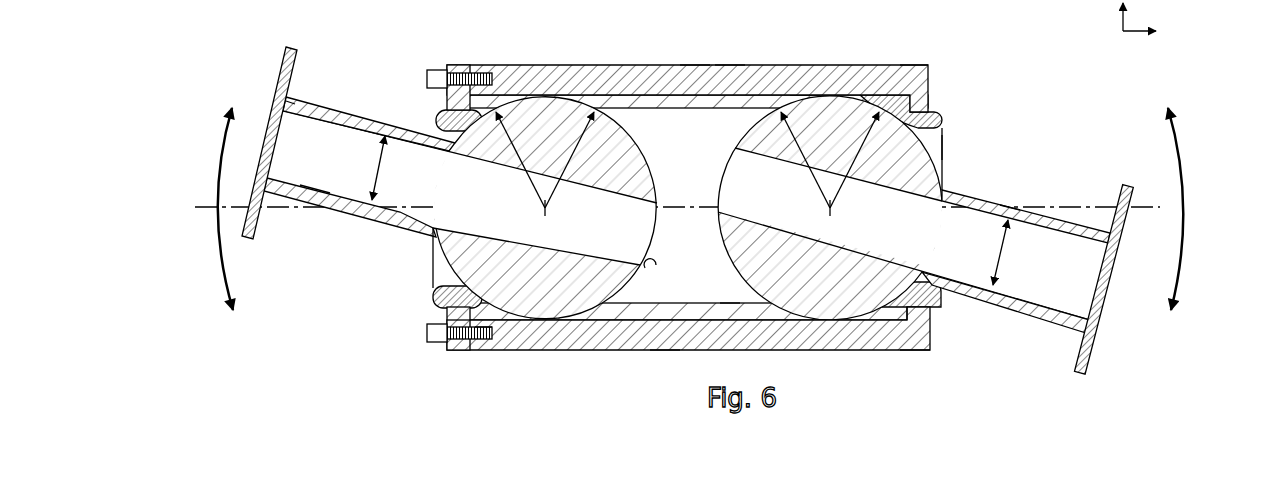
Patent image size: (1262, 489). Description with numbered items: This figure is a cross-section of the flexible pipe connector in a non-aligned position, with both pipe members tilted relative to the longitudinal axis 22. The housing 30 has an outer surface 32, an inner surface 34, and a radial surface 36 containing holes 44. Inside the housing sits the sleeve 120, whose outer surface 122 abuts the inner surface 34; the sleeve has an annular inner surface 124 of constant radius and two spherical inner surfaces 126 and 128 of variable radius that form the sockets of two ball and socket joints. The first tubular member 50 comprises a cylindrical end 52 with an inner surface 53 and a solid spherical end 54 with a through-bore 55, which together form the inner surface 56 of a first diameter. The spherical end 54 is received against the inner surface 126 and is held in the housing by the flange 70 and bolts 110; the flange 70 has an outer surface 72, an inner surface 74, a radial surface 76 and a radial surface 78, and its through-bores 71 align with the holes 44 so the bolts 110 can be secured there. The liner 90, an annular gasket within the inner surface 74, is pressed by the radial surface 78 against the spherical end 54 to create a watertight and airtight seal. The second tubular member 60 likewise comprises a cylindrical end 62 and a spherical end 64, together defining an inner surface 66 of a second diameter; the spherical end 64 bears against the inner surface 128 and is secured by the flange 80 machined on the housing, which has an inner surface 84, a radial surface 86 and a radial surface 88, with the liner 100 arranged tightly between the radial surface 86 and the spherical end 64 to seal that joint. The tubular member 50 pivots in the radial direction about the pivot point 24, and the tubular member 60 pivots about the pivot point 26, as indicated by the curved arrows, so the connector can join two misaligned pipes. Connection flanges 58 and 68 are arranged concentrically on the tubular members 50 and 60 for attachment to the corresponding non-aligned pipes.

The longitudinal axis 22 is at (1145, 210).
The pivot point 24 is at (548, 212).
The pivot point 26 is at (833, 212).
The housing 30 is at (625, 60).
The outer surface 32 is at (733, 65).
The inner surface 34 is at (692, 66).
The radial surface 36 is at (492, 75).
The holes 44 is at (483, 352).
The tubular member 50 is at (343, 100).
The cylindrical end 52 is at (325, 200).
The inner surface 53 is at (280, 112).
The spherical end 54 is at (440, 112).
The through-bore 55 is at (658, 268).
The inner surface 56 is at (300, 181).
The connection flange 58 is at (290, 50).
The tubular member 60 is at (1003, 158).
The cylindrical end 62 is at (1073, 223).
The spherical end 64 is at (944, 138).
The inner surface 66 is at (1056, 322).
The connection flange 68 is at (1097, 352).
The flange 70 is at (455, 64).
The through-bores 71 is at (452, 349).
The outer surface 72 is at (461, 352).
The inner surface 74 is at (440, 309).
The radial surface 76 is at (445, 322).
The radial surface 78 is at (480, 322).
The flange 80 is at (919, 63).
The inner surface 84 is at (934, 311).
The radial surface 86 is at (900, 322).
The radial surface 88 is at (932, 327).
The liner 90 is at (428, 296).
The liner 100 is at (946, 112).
The bolts 110 is at (425, 79).
The sleeve 120 is at (627, 322).
The outer surface 122 is at (667, 324).
The inner surface 124 is at (730, 305).
The inner surface 126 is at (587, 101).
The inner surface 128 is at (805, 97).